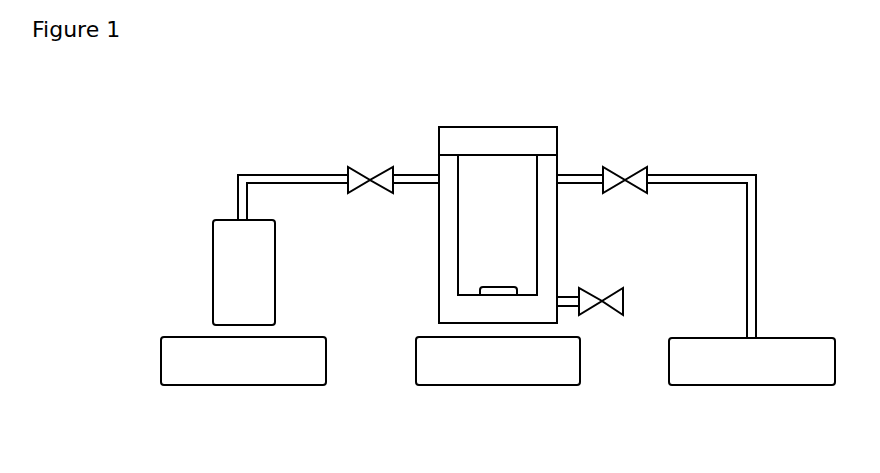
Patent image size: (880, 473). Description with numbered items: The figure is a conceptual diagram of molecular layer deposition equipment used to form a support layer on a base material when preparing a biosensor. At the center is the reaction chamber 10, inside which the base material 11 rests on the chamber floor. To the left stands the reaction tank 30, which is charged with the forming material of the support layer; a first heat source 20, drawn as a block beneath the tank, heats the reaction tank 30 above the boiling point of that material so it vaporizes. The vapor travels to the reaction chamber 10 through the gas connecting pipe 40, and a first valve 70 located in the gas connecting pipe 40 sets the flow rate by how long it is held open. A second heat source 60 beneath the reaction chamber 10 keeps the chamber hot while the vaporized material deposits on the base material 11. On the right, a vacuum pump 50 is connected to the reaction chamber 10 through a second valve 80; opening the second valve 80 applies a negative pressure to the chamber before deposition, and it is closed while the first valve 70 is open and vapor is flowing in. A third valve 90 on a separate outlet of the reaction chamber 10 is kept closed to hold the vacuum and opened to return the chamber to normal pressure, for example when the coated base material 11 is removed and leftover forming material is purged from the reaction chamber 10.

The reaction chamber 10 is at (493, 127).
The base material 11 is at (500, 278).
The first heat source 20 is at (240, 385).
The reaction tank 30 is at (213, 270).
The gas connecting pipe 40 is at (295, 175).
The vacuum pump 50 is at (750, 385).
The second heat source 60 is at (495, 385).
The first valve 70 is at (370, 167).
The second valve 80 is at (625, 167).
The third valve 90 is at (623, 300).